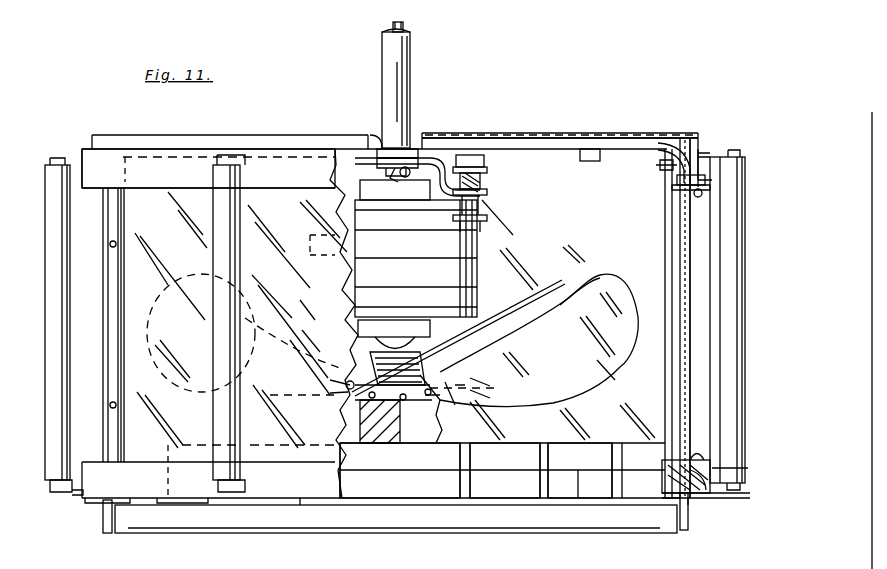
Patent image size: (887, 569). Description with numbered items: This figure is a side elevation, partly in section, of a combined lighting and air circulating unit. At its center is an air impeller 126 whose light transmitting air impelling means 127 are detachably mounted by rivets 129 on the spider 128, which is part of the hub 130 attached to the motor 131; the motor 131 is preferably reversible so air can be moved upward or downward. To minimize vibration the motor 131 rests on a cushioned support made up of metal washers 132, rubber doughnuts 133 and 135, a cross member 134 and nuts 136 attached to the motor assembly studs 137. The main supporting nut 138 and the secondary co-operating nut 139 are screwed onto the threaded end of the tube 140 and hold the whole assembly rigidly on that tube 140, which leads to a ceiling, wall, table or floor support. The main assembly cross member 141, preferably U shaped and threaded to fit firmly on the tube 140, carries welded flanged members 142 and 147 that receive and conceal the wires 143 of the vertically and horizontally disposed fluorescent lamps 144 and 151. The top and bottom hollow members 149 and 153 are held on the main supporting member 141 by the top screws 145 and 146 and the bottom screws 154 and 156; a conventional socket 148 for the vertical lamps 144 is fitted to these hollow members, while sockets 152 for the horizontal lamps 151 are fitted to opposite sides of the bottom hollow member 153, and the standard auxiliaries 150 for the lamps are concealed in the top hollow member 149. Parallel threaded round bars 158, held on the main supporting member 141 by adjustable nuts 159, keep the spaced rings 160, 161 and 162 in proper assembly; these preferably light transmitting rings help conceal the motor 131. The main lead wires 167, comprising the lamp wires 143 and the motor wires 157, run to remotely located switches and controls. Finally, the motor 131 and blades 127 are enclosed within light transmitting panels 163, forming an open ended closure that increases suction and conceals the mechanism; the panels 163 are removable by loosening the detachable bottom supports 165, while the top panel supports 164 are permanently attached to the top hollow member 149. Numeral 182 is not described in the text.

The air impeller 126 is at (402, 425).
The light transmitting air impelling means 127 is at (513, 307).
The spider 128 is at (468, 408).
The rivets 129 is at (460, 382).
The hub 130 is at (340, 372).
The motor 131 is at (416, 264).
The metal washers 132 is at (485, 221).
The rubber doughnut 133 is at (485, 197).
The cross member 134 is at (482, 190).
The rubber doughnut 135 is at (488, 175).
The nuts 136 is at (485, 163).
The motor assembly studs 137 is at (310, 347).
The main supporting nut 138 is at (197, 553).
The secondary co-operating nut 139 is at (390, 162).
The tube 140 is at (382, 82).
The main assembly cross member 141 is at (665, 215).
The flanged member 142 is at (670, 138).
The wires 143 is at (683, 244).
The vertically disposed fluorescent lighting lamps 144 is at (748, 285).
The top screw 145 is at (702, 194).
The top screw 146 is at (660, 166).
The flanged member 147 is at (690, 240).
The socket 148 is at (712, 493).
The top hollow member 149 is at (705, 178).
The standard auxiliaries 150 is at (706, 183).
The horizontally disposed fluorescent lighting lamps 151 is at (610, 520).
The sockets 152 is at (686, 525).
The bottom hollow member 153 is at (712, 472).
The bottom screw 154 is at (702, 500).
The bottom screw 156 is at (706, 485).
The wires 157 is at (396, 182).
The parallel threaded round bars 158 is at (578, 477).
The adjustable nuts 159 is at (665, 463).
The spaced ring 160 is at (458, 482).
The spaced ring 161 is at (540, 482).
The spaced ring 162 is at (612, 482).
The light transmitting panels 163 is at (310, 434).
The top panel supports 164 is at (600, 142).
The detachable bottom supports 165 is at (693, 505).
The main lead wires 167 is at (403, 30).
The collar 182 is at (485, 170).